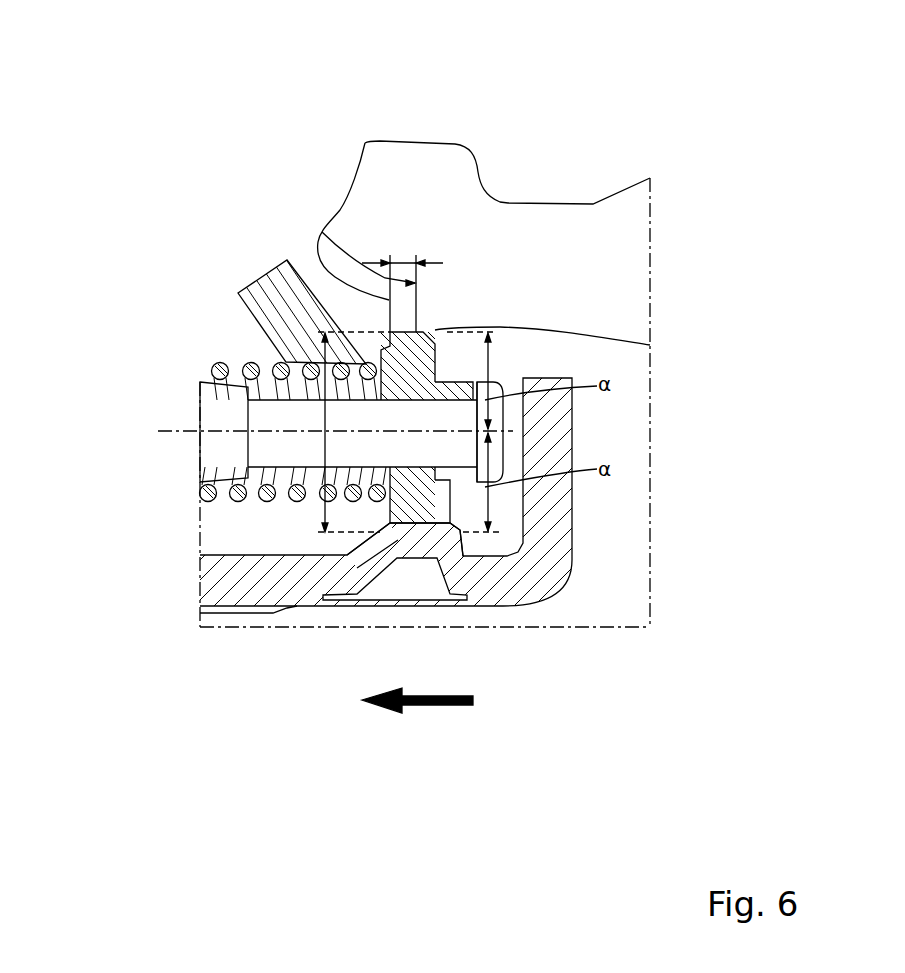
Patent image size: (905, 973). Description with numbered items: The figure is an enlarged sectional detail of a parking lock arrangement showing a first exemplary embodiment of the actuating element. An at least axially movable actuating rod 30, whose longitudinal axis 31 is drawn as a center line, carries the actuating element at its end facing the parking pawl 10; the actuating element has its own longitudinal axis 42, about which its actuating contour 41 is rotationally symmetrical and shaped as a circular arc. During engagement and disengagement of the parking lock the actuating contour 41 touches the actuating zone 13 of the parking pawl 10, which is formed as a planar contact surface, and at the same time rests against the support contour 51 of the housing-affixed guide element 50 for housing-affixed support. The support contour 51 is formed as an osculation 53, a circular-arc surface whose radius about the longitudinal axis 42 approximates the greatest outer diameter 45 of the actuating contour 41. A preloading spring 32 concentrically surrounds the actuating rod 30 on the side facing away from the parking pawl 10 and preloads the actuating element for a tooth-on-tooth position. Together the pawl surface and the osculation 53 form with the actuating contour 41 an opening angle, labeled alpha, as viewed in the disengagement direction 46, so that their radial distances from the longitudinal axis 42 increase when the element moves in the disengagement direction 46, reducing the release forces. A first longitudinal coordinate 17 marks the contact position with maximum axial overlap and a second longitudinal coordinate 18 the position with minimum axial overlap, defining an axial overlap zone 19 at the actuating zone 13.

The parking pawl 10 is at (530, 230).
The actuating zone 13 is at (480, 368).
The first longitudinal coordinate 17 is at (390, 333).
The second longitudinal coordinate 18 is at (389, 300).
The axial overlap zone 19 is at (403, 262).
The actuating rod 30 is at (227, 455).
The longitudinal axis of the actuating rod 31 is at (171, 429).
The preloading spring 32 is at (238, 492).
The actuating contour 41 is at (426, 331).
The longitudinal axis of the actuating element 42 is at (171, 428).
The greatest outer diameter 45 is at (290, 362).
The disengagement direction 46 is at (437, 706).
The housing-affixed guide element 50 is at (503, 606).
The support contour 51 is at (410, 522).
The osculation 53 is at (452, 522).